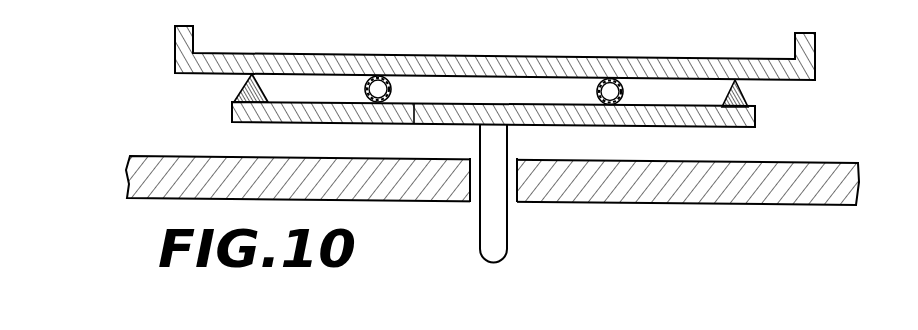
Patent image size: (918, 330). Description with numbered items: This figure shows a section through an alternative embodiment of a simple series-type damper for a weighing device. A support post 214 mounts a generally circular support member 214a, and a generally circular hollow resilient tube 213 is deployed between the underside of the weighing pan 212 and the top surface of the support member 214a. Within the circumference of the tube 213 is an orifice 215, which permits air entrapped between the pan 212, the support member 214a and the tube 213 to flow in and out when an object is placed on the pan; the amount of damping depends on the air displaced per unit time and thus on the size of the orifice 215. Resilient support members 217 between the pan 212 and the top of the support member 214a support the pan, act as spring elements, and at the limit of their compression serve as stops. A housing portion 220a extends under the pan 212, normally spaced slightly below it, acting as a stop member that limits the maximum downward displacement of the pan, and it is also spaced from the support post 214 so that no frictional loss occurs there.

The weighing pan 212 is at (518, 57).
The hollow resilient tube 213 is at (365, 92).
The support post 214 is at (508, 231).
The support member 214a is at (608, 128).
The orifice 215 is at (415, 124).
The resilient support members 217 is at (242, 90).
The housing portion 220a is at (238, 156).